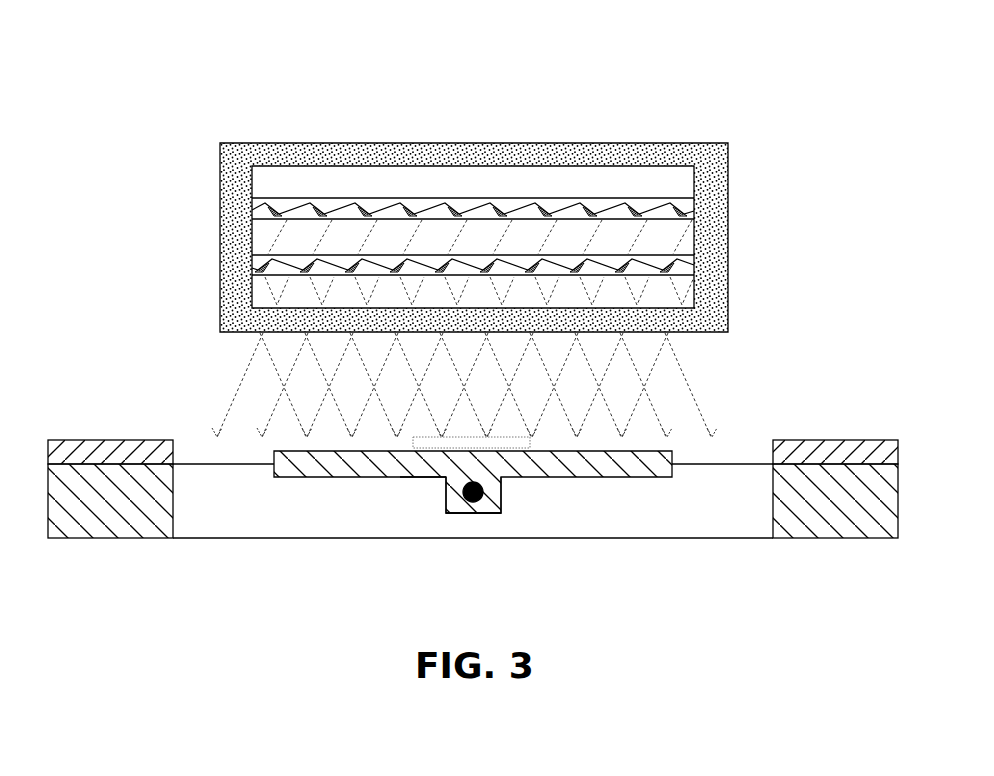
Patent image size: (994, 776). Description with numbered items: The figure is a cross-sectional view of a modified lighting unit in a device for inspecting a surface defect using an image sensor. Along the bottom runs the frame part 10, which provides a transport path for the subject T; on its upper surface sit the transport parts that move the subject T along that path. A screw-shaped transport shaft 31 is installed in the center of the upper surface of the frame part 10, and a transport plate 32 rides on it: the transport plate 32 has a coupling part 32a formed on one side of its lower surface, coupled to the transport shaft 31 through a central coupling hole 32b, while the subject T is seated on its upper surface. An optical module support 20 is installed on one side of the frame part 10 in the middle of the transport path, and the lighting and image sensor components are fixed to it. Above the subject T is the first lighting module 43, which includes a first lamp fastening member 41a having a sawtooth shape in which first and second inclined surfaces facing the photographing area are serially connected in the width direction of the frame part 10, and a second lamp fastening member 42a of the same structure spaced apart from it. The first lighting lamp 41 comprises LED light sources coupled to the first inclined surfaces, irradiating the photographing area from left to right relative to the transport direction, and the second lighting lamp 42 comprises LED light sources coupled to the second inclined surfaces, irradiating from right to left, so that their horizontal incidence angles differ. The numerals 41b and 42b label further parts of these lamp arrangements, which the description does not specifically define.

The frame part 10 is at (817, 527).
The optical module support 20 is at (842, 438).
The transport shaft 31 is at (457, 513).
The transport plate 32 is at (665, 478).
The coupling part 32a is at (483, 514).
The central coupling hole 32b is at (503, 508).
The subject T is at (415, 478).
The first lighting lamp 41 is at (371, 145).
The first lamp fastening member 41a is at (401, 128).
The second optical sheet 41b is at (220, 272).
The second lighting lamp 42 is at (473, 115).
The second lamp fastening member 42a is at (333, 202).
The prism 42b is at (402, 202).
The first lighting module 43 is at (728, 173).